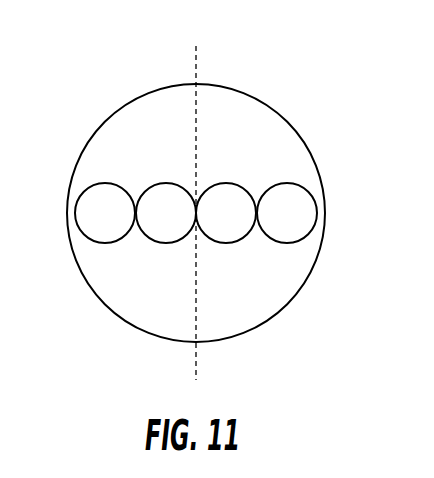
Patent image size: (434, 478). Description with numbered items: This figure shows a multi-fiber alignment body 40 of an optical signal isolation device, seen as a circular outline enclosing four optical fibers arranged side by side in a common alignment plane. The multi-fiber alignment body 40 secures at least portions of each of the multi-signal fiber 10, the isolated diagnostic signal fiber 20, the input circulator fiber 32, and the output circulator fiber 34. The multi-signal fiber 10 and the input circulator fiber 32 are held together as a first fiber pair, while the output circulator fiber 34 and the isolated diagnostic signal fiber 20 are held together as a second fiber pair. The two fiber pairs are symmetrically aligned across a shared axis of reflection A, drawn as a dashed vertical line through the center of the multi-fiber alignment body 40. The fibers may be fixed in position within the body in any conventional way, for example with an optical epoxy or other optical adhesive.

The multi-signal fiber 10 is at (286, 233).
The isolated diagnostic signal fiber 20 is at (101, 192).
The input circulator fiber 32 is at (165, 233).
The output circulator fiber 34 is at (227, 197).
The multi-fiber alignment body 40 is at (318, 152).
The axis of reflection A is at (196, 69).